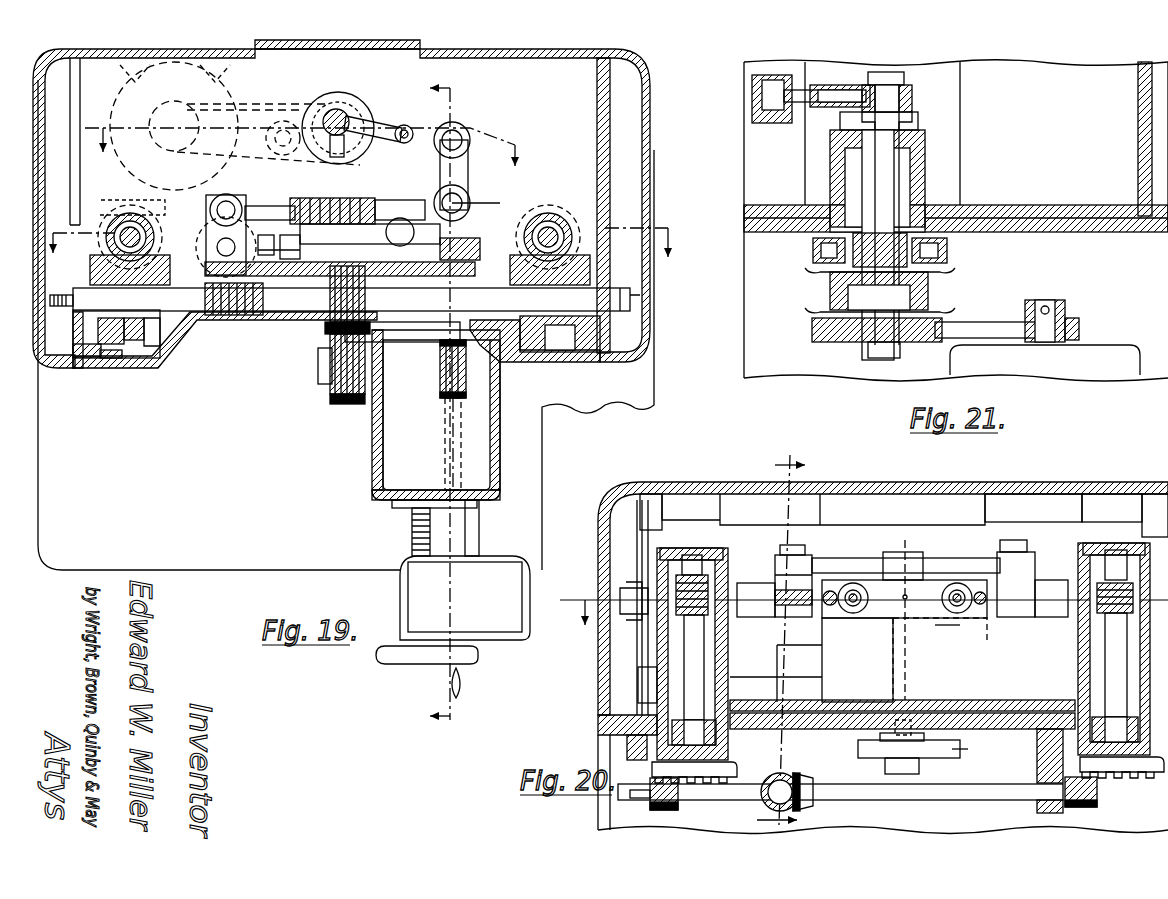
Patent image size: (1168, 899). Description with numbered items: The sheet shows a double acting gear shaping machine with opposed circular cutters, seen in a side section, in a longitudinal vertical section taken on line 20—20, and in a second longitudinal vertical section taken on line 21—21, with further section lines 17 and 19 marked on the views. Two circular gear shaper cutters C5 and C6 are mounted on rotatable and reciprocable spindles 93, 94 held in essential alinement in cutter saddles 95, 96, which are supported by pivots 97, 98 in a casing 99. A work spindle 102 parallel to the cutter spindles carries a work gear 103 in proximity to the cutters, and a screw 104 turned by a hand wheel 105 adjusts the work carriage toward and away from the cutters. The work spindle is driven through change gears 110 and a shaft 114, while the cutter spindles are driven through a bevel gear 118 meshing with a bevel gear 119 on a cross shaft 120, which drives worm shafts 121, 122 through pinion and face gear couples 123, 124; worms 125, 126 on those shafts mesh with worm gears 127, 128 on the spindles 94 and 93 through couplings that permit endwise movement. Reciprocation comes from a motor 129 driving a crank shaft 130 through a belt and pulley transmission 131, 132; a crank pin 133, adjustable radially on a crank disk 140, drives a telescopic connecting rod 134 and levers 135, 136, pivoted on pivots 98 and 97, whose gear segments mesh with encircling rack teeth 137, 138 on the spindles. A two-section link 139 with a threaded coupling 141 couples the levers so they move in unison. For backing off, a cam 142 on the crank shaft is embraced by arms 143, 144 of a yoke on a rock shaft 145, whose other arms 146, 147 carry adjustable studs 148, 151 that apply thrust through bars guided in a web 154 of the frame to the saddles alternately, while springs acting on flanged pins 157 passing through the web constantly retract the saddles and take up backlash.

In FIG. 19, the section line 17— 17 is at (454, 405).
In FIG. 20, the section line 17— 17 is at (772, 632).
In FIG. 20, the section line 19— 19 is at (863, 611).
In FIG. 19, the section line 20— 20 is at (370, 254).
In FIG. 19, the section line 21— 21 is at (313, 137).
In FIG. 19, the spindle 93 is at (283, 322).
In FIG. 19, the spindle 94 is at (400, 342).
In FIG. 19, the cutter saddle 95 is at (200, 322).
In FIG. 19, the cutter saddle 96 is at (520, 362).
In FIG. 19, the pivot 97 is at (217, 248).
In FIG. 19, the pivot 98 is at (465, 260).
In FIG. 19, the casing 99 is at (578, 122).
In FIG. 19, the work spindle 102 is at (408, 392).
In FIG. 19, the work gear 103 is at (342, 404).
In FIG. 19, the screw 104 is at (412, 540).
In FIG. 19, the hand wheel 105 is at (436, 670).
In FIG. 19, the change gear 110 is at (448, 415).
In FIG. 19, the shaft 114 is at (480, 552).
In FIG. 20, the bevel gear 118 is at (775, 774).
In FIG. 20, the bevel gear 119 is at (800, 778).
In FIG. 20, the cross shaft 120 is at (985, 790).
In FIG. 20, the worm shaft 121 is at (700, 672).
In FIG. 20, the worm shaft 122 is at (1110, 652).
In FIG. 20, the pinion and face gear couple 123 is at (700, 800).
In FIG. 20, the pinion and face gear couple 124 is at (1097, 800).
In FIG. 19, the worm 125 is at (550, 210).
In FIG. 20, the worm 125 is at (692, 565).
In FIG. 19, the worm 126 is at (140, 210).
In FIG. 20, the worm 126 is at (1112, 578).
In FIG. 19, the worm gear 127 is at (565, 352).
In FIG. 19, the worm gear 128 is at (135, 368).
In FIG. 19, the motor 129 is at (120, 210).
In FIG. 21, the motor 129 is at (1098, 345).
In FIG. 21, the crank shaft 130 is at (885, 195).
In FIG. 19, the belt and pulley transmission 131 is at (283, 120).
In FIG. 21, the belt and pulley transmission 131 is at (992, 322).
In FIG. 21, the belt and pulley transmission 132 is at (850, 342).
In FIG. 19, the crank pin 133 is at (340, 110).
In FIG. 21, the crank pin 133 is at (900, 100).
In FIG. 19, the connecting rod 134 is at (380, 118).
In FIG. 21, the connecting rod 134 is at (836, 80).
In FIG. 19, the lever 135 is at (470, 160).
In FIG. 21, the lever 135 is at (786, 128).
In FIG. 20, the lever 135 is at (1022, 585).
In FIG. 19, the lever 136 is at (210, 268).
In FIG. 20, the lever 136 is at (780, 580).
In FIG. 19, the rack teeth 137 is at (447, 345).
In FIG. 19, the rack teeth 138 is at (242, 322).
In FIG. 19, the link 139 is at (232, 196).
In FIG. 20, the link 139 is at (845, 560).
In FIG. 19, the crank disk 140 is at (330, 118).
In FIG. 21, the crank disk 140 is at (918, 118).
In FIG. 19, the coupling 141 is at (352, 210).
In FIG. 20, the coupling 141 is at (905, 553).
In FIG. 21, the cam 142 is at (832, 280).
In FIG. 19, the arm 143 is at (290, 202).
In FIG. 21, the arm 143 is at (947, 255).
In FIG. 20, the arm 143 is at (930, 753).
In FIG. 19, the arm 144 is at (400, 200).
In FIG. 21, the arm 144 is at (813, 252).
In FIG. 20, the arm 144 is at (885, 766).
In FIG. 20, the rock shaft 145 is at (915, 688).
In FIG. 19, the arm 146 is at (285, 236).
In FIG. 20, the arm 146 is at (940, 628).
In FIG. 19, the arm 147 is at (405, 222).
In FIG. 20, the arm 147 is at (880, 625).
In FIG. 20, the adjustable stud 148 is at (960, 614).
In FIG. 20, the adjustable stud 151 is at (850, 614).
In FIG. 19, the web 154 is at (335, 276).
In FIG. 20, the web 154 is at (975, 518).
In FIG. 20, the pin 157 is at (828, 606).
In FIG. 19, the circular gear shaper cutter C5 is at (333, 326).
In FIG. 19, the circular gear shaper cutter C6 is at (359, 294).